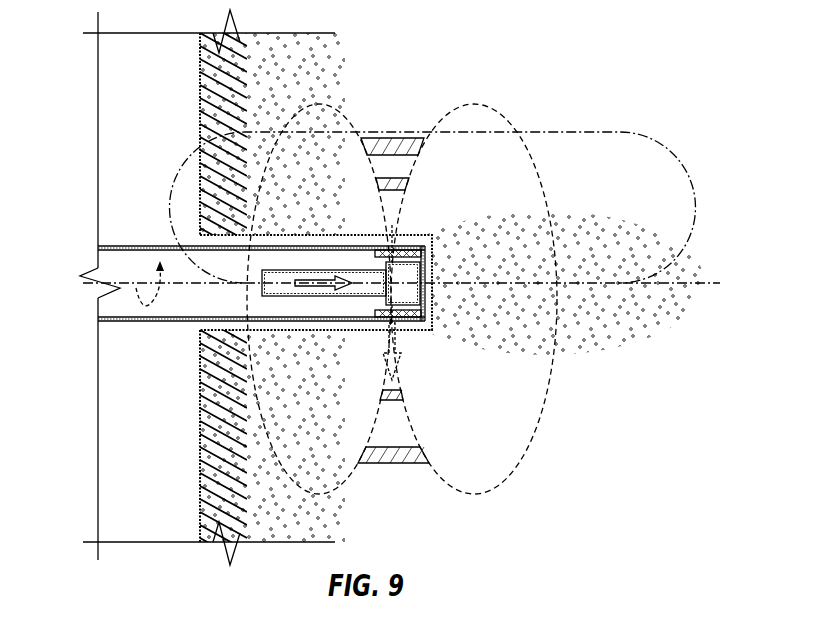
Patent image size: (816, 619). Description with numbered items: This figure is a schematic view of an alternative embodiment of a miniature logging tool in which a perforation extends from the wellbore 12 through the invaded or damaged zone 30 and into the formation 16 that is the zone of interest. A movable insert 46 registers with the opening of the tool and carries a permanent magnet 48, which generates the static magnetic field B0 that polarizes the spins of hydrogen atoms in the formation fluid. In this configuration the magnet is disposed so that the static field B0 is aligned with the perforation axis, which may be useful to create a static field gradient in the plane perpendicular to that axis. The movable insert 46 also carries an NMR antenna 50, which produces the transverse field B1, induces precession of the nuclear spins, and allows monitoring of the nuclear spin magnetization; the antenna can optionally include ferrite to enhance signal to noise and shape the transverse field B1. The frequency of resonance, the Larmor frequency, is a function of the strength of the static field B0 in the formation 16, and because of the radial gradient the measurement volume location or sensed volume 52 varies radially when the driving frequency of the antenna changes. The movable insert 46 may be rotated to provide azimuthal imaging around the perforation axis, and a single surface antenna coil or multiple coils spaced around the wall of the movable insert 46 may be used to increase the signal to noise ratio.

The wellbore 12 is at (166, 140).
The formation 16 is at (298, 100).
The invaded/damaged zone 30 is at (224, 454).
The movable insert 46 is at (158, 318).
The permanent magnet 48 is at (293, 272).
The NMR antenna 50 is at (417, 252).
The measurement volume location 52 is at (393, 187).
The static magnetic field B0 is at (320, 281).
The transverse field B1 is at (393, 340).